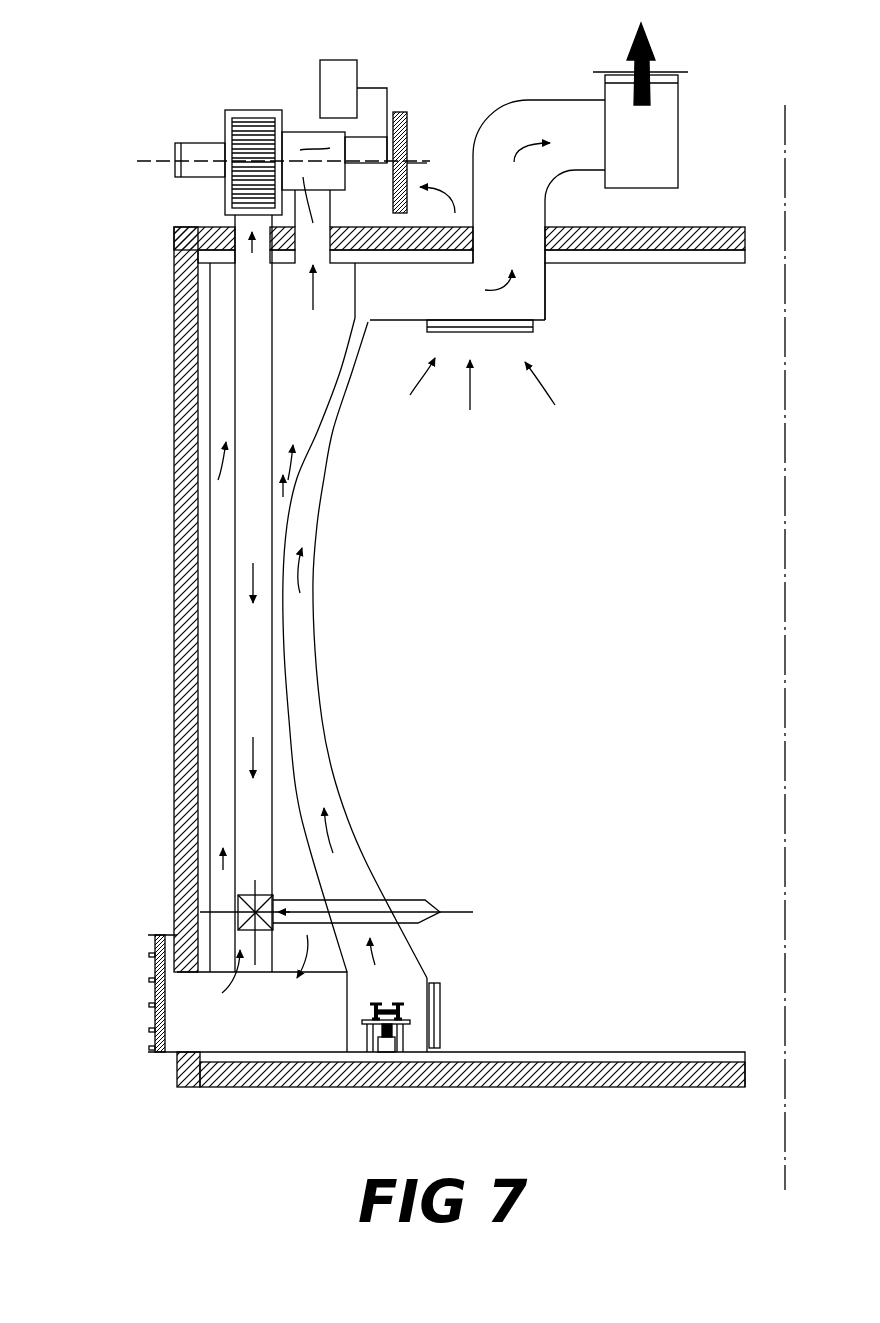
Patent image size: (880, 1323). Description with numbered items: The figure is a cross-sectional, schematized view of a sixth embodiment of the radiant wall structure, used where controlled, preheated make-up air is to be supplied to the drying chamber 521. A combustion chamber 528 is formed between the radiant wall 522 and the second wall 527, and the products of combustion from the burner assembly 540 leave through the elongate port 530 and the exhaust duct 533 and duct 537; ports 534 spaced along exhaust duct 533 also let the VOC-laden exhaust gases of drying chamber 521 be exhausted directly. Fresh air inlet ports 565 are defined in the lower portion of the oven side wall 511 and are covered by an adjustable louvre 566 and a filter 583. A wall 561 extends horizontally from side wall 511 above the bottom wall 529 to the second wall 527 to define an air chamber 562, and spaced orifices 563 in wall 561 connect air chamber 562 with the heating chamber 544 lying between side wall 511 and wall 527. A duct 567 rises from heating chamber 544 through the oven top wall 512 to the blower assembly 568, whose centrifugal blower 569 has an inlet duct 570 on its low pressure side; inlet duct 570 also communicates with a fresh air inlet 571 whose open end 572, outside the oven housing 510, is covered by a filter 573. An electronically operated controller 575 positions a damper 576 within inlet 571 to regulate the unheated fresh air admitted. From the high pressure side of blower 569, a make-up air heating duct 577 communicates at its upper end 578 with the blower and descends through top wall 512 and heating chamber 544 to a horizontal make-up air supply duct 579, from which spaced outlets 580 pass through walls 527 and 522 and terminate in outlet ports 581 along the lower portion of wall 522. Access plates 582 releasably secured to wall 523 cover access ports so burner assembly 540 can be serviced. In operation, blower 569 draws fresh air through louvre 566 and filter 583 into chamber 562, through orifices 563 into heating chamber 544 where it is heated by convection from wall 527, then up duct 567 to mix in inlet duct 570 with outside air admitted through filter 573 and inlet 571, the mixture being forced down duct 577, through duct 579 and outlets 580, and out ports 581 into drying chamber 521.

The oven housing 510 is at (197, 63).
The oven side wall 511 is at (183, 450).
The oven top wall 512 is at (678, 230).
The drying chamber 521 is at (650, 543).
The radiant wall 522 is at (316, 665).
The wall 523 is at (440, 978).
The second wall 527 is at (293, 763).
The combustion chamber 528 is at (356, 862).
The bottom wall 529 is at (303, 1058).
The elongate port 530 is at (358, 300).
The exhaust duct 533 is at (540, 290).
The ports 534 is at (528, 333).
The duct 537 is at (605, 92).
The burner assembly 540 is at (412, 1036).
The heating chamber 544 is at (293, 297).
The wall 561 is at (228, 1013).
The air chamber 562 is at (210, 1036).
The spaced orifices 563 is at (272, 975).
The fresh air inlet ports 565 is at (175, 1052).
The adjustable louvre 566 is at (148, 955).
The duct 567 is at (333, 198).
The blower assembly 568 is at (288, 75).
The centrifugal blower 569 is at (200, 145).
The inlet duct 570 is at (297, 130).
The fresh air inlet 571 is at (362, 180).
The open end 572 is at (400, 112).
The filter 573 is at (420, 138).
The electronically operated controller 575 is at (337, 60).
The damper 576 is at (408, 173).
The make-up air heating duct 577 is at (237, 682).
The upper end 578 is at (237, 220).
The make-up air supply duct 579 is at (250, 910).
The spaced outlets 580 is at (425, 902).
The outlet ports 581 is at (423, 915).
The access plates 582 is at (423, 1057).
The filter 583 is at (170, 935).